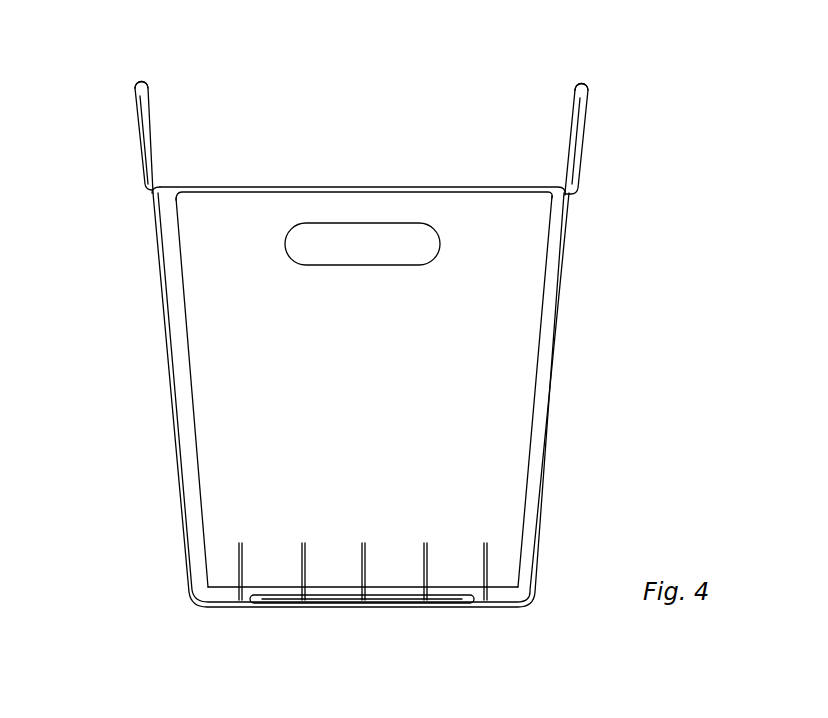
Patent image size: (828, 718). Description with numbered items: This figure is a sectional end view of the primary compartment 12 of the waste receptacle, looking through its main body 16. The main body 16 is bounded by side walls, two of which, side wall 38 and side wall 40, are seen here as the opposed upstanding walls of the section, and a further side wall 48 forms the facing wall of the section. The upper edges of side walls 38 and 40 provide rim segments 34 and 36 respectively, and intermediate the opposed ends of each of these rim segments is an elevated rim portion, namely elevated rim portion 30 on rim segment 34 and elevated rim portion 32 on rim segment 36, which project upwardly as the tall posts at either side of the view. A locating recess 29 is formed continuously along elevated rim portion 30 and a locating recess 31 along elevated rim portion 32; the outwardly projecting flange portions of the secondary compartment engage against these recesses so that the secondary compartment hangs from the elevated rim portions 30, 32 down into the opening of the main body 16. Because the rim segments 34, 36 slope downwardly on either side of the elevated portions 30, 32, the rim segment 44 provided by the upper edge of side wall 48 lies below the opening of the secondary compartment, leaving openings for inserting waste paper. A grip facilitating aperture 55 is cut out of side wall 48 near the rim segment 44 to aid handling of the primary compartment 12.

The primary compartment 12 is at (652, 462).
The main body 16 is at (184, 544).
The locating recess 29 is at (590, 95).
The elevated rim portion 30 is at (586, 84).
The locating recess 31 is at (138, 93).
The elevated rim portion 32 is at (140, 82).
The rim segment 34 is at (589, 140).
The rim segment 36 is at (138, 145).
The side wall 38 is at (560, 308).
The side wall 40 is at (160, 300).
The rim segment 44 is at (262, 186).
The side wall 48 is at (225, 397).
The grip facilitating aperture 55 is at (357, 243).